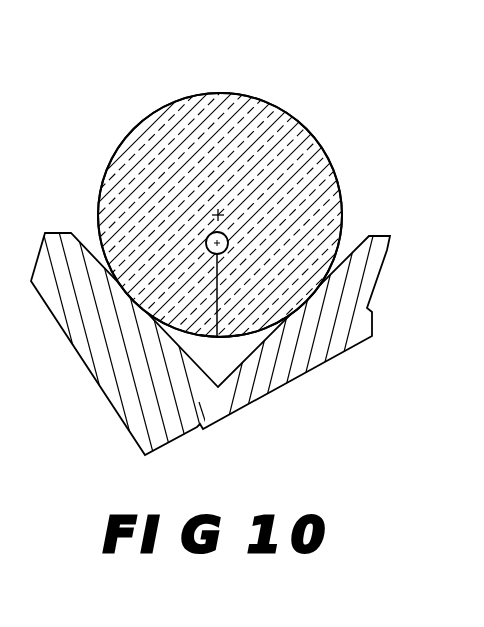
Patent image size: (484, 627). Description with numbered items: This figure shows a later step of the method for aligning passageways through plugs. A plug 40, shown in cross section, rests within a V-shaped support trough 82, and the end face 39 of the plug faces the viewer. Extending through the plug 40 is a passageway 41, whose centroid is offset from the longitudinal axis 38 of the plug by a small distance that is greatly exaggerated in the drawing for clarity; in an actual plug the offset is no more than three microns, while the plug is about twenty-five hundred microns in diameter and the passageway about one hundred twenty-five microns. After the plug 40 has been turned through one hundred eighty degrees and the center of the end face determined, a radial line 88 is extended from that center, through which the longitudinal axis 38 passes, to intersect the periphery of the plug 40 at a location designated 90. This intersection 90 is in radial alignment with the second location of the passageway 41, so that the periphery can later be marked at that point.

The V-shaped support trough 82 is at (90, 364).
The plug 40 is at (294, 124).
The end face 39 is at (167, 127).
The longitudinal axis 38 is at (219, 211).
The passageway 41 is at (194, 236).
The radial line 88 is at (219, 300).
The intersection location 90 is at (213, 338).